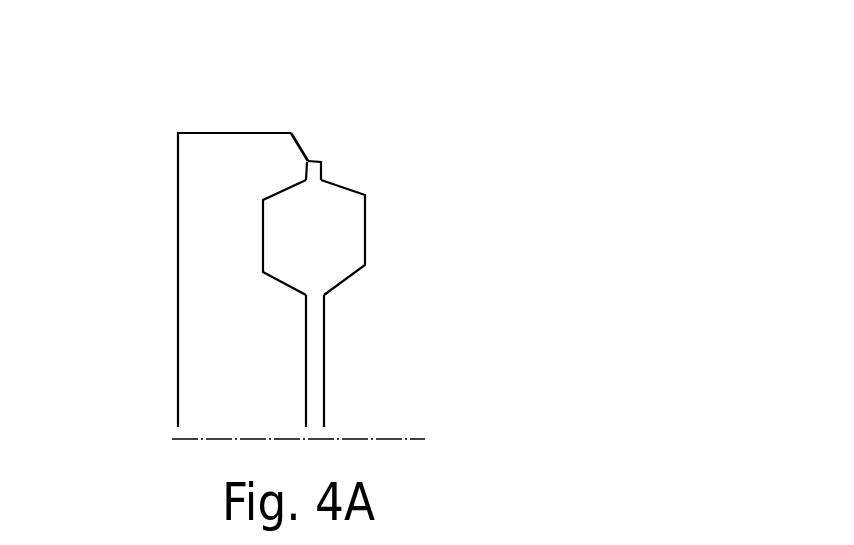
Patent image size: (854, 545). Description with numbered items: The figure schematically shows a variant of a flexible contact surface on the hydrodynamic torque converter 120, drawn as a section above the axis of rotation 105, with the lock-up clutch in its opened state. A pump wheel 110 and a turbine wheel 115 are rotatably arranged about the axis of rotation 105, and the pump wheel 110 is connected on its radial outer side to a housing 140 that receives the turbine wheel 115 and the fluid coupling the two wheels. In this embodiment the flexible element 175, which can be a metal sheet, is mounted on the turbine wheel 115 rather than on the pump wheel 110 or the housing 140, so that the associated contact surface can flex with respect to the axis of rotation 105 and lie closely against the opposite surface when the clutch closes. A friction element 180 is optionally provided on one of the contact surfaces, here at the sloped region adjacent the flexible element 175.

The hydrodynamic torque converter 120 is at (413, 82).
The housing 140 is at (178, 204).
The friction element 180 is at (300, 140).
The flexible element 175 is at (318, 165).
The turbine wheel 115 is at (268, 232).
The pump wheel 110 is at (326, 325).
The axis of rotation 105 is at (415, 438).